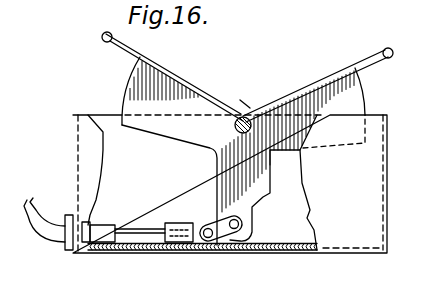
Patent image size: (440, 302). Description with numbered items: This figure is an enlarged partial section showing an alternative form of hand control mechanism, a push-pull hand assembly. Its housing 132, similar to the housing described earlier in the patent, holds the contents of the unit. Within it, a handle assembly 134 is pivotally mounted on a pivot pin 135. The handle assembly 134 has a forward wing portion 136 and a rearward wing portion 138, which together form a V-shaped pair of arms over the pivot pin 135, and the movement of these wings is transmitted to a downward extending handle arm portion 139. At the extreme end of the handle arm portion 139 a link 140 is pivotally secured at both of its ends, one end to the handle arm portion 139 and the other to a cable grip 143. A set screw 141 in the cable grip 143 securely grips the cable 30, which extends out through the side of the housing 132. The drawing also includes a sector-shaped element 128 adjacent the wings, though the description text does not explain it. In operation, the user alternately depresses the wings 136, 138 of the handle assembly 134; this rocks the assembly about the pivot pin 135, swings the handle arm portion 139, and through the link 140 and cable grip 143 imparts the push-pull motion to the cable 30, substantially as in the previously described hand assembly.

The cable 30 is at (122, 228).
The sector plate 128 is at (374, 97).
The housing 132 is at (368, 165).
The handle assembly 134 is at (253, 97).
The pivot pin 135 is at (255, 110).
The forward wing portion 136 is at (161, 58).
The rearward wing portion 138 is at (370, 50).
The handle arm portion 139 is at (217, 172).
The link 140 is at (232, 246).
The set screw 141 is at (178, 223).
The cable grip 143 is at (190, 223).